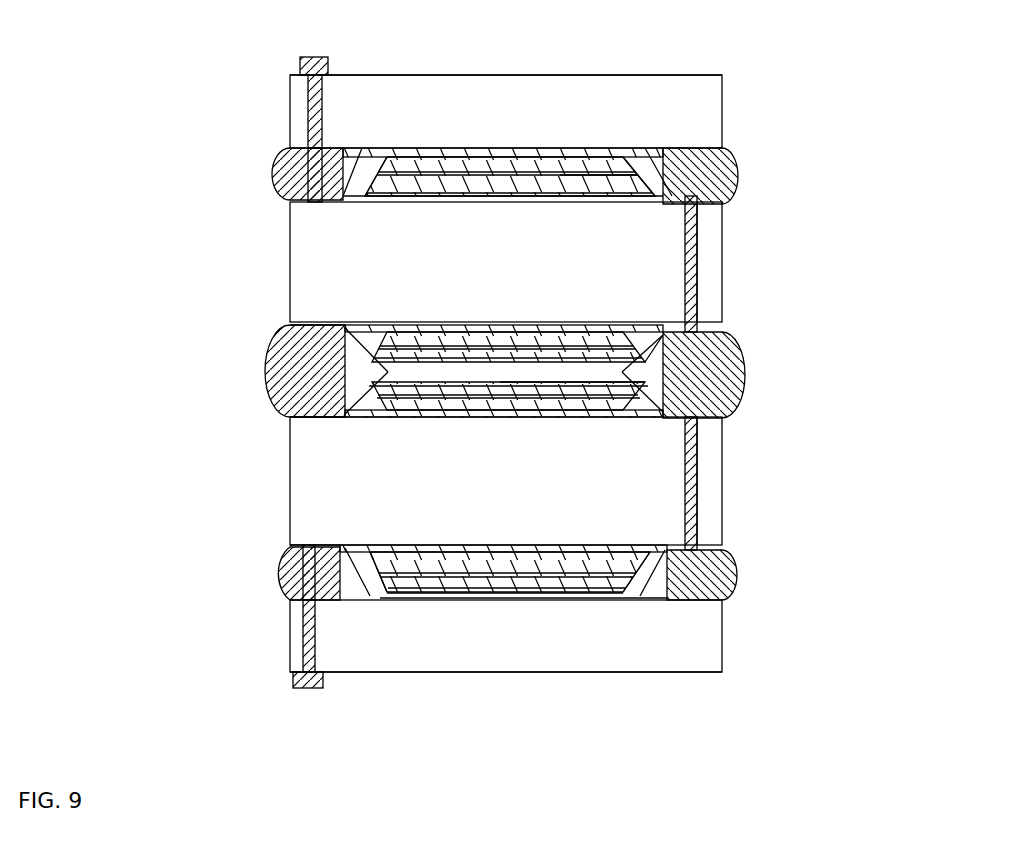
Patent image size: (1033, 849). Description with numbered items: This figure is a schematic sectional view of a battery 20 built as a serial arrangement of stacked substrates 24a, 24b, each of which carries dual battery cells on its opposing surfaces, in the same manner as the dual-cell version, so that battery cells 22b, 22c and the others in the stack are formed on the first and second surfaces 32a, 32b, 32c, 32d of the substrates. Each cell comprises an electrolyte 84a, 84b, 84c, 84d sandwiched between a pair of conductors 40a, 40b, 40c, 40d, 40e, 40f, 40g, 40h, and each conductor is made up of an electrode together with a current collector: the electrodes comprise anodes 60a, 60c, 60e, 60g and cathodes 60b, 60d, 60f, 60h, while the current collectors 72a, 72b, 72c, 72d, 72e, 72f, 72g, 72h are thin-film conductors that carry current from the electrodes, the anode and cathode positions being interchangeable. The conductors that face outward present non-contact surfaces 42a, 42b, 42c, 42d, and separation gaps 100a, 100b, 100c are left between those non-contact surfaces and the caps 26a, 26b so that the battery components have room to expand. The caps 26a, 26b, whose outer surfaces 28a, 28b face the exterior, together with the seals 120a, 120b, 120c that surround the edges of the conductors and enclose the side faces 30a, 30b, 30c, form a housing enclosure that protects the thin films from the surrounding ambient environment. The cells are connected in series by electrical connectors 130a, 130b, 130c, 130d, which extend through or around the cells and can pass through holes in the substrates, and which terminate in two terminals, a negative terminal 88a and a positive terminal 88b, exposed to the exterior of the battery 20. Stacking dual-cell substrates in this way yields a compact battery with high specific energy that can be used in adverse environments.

The battery 20 is at (173, 95).
The battery cell 22b is at (648, 162).
The battery cell 22c is at (655, 586).
The substrate 24a is at (529, 277).
The substrate 24b is at (506, 497).
The cap 26a is at (526, 120).
The cap 26b is at (521, 637).
The outer surface 28a is at (548, 75).
The outer surface 28b is at (573, 672).
The side face 30a is at (262, 180).
The side face 30b is at (252, 376).
The seal 30c is at (262, 583).
The first surface 32a is at (358, 204).
The second surface 32b is at (318, 325).
The seal surface 32c is at (312, 420).
The seal surface 32d is at (355, 545).
The conductor 40a is at (668, 195).
The conductor 40b is at (370, 180).
The conductor 40c is at (640, 335).
The conductor 40d is at (378, 338).
The conductor 40e is at (640, 398).
The conductor 40f is at (385, 415).
The edge 40g is at (645, 566).
The edge 40h is at (400, 583).
The non-contact surface 42a is at (565, 165).
The non-contact surface 42b is at (480, 345).
The electrode layer 42c is at (560, 398).
The electrode layer 42d is at (598, 592).
The anode 60a is at (560, 185).
The cathode 60b is at (596, 186).
The anode 60c is at (532, 342).
The cathode 60d is at (592, 342).
The anode 60e is at (545, 395).
The cathode 60f is at (445, 408).
The layer 60g is at (500, 562).
The layer 60h is at (575, 566).
The anode current collector 72a is at (697, 212).
The cathode current collector 72b is at (410, 204).
The anode current collector 72c is at (697, 292).
The cathode current collector 72d is at (437, 338).
The anode current collector 72e is at (697, 445).
The cathode current collector 72f is at (352, 417).
The opening 72g is at (697, 515).
The opening 72h is at (378, 555).
The electrolyte 84a is at (405, 170).
The electrolyte 84b is at (425, 340).
The membrane layer 84c is at (425, 408).
The membrane layer 84d is at (440, 562).
The negative terminal 88a is at (316, 57).
The positive terminal 88b is at (310, 688).
The first separation gap 100a is at (475, 196).
The second separation gap 100b is at (498, 395).
The current collector 100c is at (553, 600).
The seal 120a is at (736, 172).
The seal 120b is at (746, 372).
The seal 120c is at (737, 572).
The electrical connector 130a is at (318, 92).
The electrical connector 130b is at (697, 265).
The electrical connector 130c is at (697, 478).
The electrical connector 130d is at (303, 622).